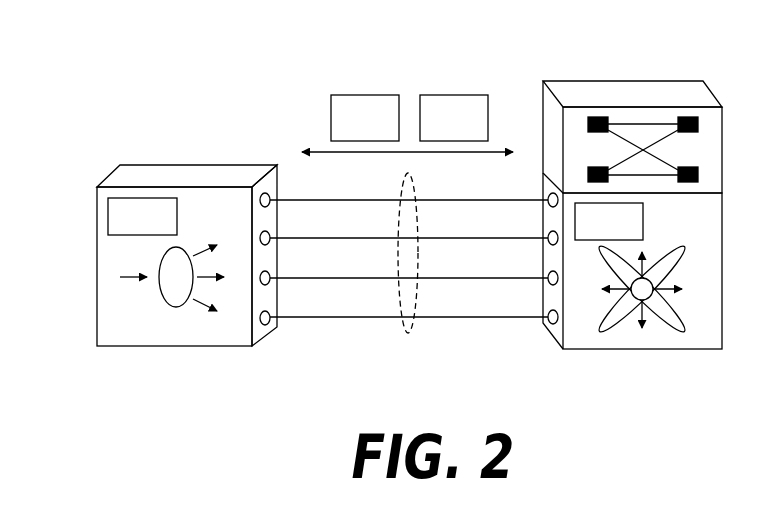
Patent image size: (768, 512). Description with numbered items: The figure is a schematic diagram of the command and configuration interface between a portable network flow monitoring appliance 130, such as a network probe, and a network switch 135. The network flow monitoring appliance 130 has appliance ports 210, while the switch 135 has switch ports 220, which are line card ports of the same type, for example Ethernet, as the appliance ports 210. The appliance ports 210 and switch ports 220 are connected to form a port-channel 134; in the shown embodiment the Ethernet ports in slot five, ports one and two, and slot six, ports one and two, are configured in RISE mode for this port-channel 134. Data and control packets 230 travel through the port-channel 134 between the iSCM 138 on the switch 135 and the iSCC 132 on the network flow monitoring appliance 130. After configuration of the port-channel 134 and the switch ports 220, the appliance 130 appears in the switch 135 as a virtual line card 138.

The network flow monitoring appliance 130 is at (158, 156).
The iSCC 132 is at (177, 218).
The port-channel 134 is at (405, 333).
The network switch 135 is at (665, 73).
The iSCM 138 is at (643, 222).
The appliance ports 210 is at (266, 340).
The switch ports 220 is at (551, 343).
The data and control packets 230 is at (310, 118).